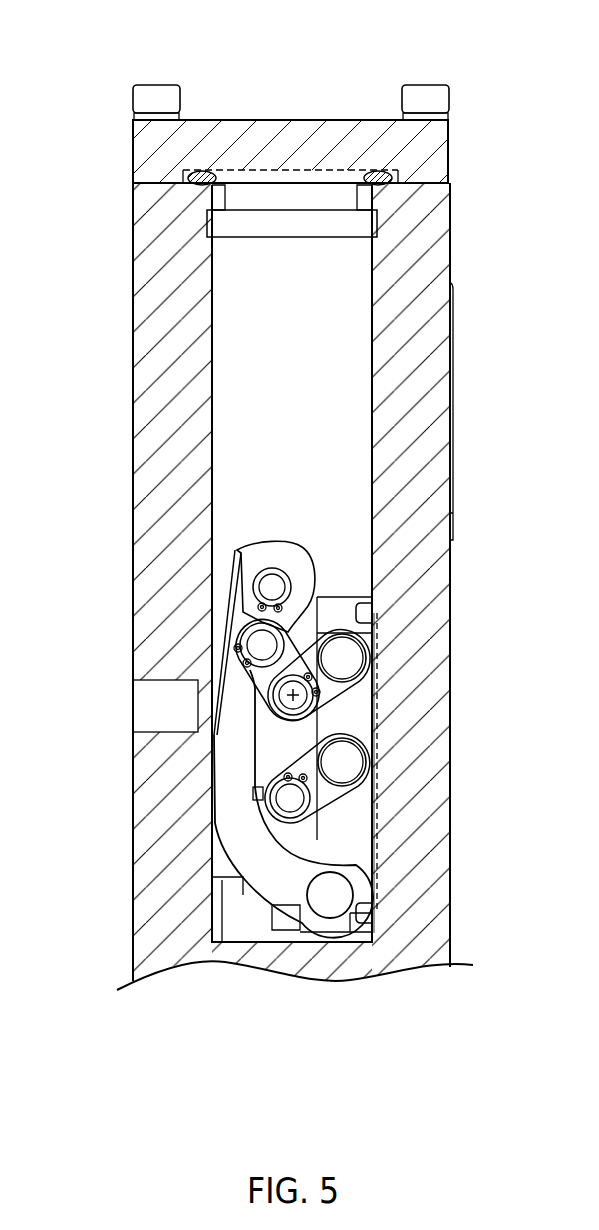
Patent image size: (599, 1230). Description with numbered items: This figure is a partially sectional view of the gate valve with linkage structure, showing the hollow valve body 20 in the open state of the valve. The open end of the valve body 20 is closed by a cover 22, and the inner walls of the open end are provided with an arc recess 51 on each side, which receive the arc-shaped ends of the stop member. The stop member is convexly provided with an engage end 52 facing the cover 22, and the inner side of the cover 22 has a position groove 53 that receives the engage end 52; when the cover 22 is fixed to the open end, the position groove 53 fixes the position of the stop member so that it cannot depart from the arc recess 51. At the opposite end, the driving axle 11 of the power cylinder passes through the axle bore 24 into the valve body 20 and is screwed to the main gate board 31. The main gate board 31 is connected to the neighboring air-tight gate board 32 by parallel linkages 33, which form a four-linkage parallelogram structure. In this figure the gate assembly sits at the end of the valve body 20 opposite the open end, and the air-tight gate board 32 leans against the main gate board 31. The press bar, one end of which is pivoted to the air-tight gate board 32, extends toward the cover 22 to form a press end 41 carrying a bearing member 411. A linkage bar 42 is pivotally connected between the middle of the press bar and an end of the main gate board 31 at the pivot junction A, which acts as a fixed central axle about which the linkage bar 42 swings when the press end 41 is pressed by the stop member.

The hollow valve body 20 is at (110, 343).
The cover 22 is at (245, 137).
The engage end 52 is at (340, 195).
The position groove 53 is at (288, 165).
The arc recess 51 is at (378, 222).
The driving axle 11 is at (250, 928).
The axle bore 24 is at (328, 930).
The air-tight gate board 32 is at (337, 613).
The parallel linkage 33 is at (328, 692).
The press end 41 is at (245, 600).
The bearing member 411 is at (263, 548).
The linkage bar 42 is at (258, 679).
The pivot junction A is at (290, 697).
The main gate board 31 is at (275, 757).